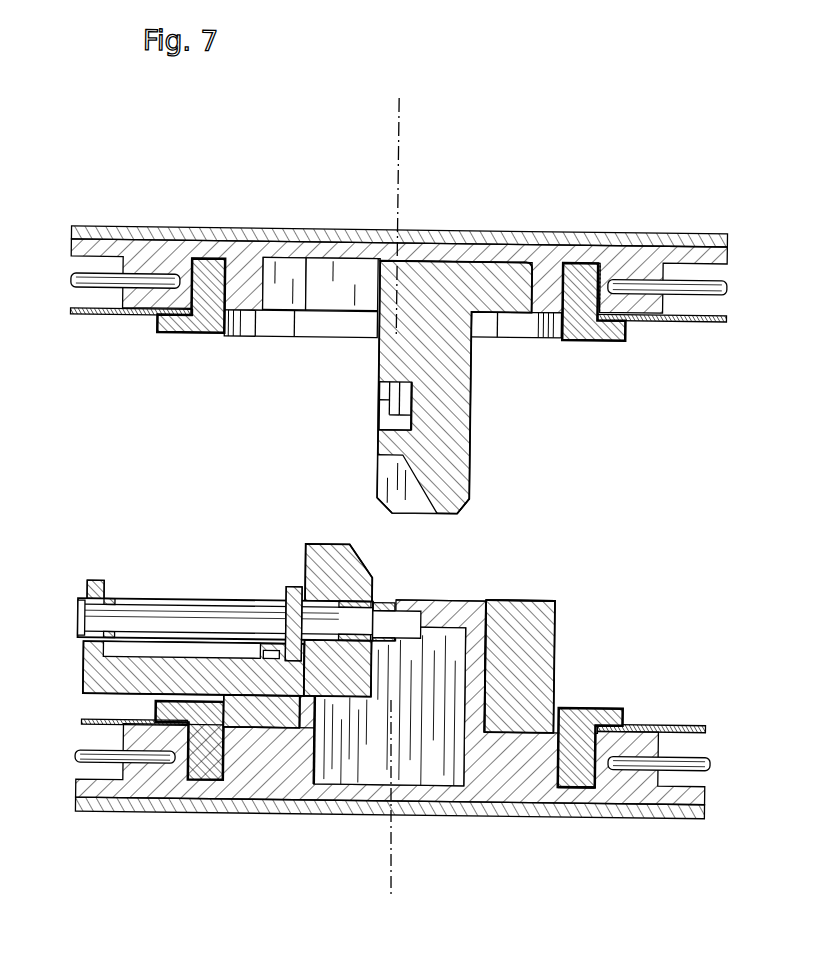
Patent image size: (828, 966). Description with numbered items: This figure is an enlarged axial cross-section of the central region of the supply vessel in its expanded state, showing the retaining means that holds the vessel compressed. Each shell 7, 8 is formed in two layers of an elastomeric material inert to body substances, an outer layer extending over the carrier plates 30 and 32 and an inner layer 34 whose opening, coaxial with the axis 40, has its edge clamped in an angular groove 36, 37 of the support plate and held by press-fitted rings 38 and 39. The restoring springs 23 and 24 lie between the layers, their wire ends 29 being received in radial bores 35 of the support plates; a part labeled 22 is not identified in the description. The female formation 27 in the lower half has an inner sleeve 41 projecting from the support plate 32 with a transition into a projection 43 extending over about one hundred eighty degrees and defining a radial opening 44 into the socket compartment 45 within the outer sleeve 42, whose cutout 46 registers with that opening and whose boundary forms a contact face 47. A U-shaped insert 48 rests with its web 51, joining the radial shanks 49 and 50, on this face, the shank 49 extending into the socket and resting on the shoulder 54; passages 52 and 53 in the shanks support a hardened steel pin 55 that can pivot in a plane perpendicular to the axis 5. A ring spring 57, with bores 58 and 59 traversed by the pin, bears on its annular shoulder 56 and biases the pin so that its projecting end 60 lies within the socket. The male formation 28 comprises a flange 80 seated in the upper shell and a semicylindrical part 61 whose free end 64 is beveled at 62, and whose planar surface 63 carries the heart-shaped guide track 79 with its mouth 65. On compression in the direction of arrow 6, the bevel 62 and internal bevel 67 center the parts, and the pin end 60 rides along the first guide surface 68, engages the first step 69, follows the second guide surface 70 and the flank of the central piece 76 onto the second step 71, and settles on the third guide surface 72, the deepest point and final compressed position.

The axis 5 is at (394, 155).
The arrow 6 is at (417, 103).
The shell 7 is at (621, 217).
The shell 8 is at (685, 698).
The upper mounting plate 22 is at (638, 382).
The restoring spring 23 is at (97, 284).
The restoring spring 24 is at (686, 760).
The female formation 27 is at (541, 583).
The male formation 28 is at (481, 419).
The ends 29 is at (173, 278).
The support plate 30 is at (305, 251).
The support plate 32 is at (518, 769).
The inner layer 34 is at (94, 319).
The radial bores 35 is at (147, 271).
The angular groove 36 is at (570, 261).
The angular groove 37 is at (582, 785).
The press-fitted ring 38 is at (580, 288).
The press-fitted ring 39 is at (595, 711).
The axis 40 is at (179, 298).
The inner sleeve 41 is at (480, 657).
The outer sleeve 42 is at (479, 631).
The projection 43 is at (556, 600).
The radial opening 44 is at (383, 677).
The socket compartment 45 is at (449, 744).
The radial opening 46 is at (208, 599).
The contact face 47 is at (255, 702).
The U-shaped insert 48 is at (172, 683).
The radial shank 49 is at (308, 548).
The radial shank 50 is at (95, 587).
The web 51 is at (148, 780).
The passage 52 is at (354, 698).
The passage 53 is at (75, 600).
The shoulder 54 is at (250, 727).
The pin 55 is at (336, 626).
The annular shoulder 56 is at (287, 661).
The spring 57 is at (225, 593).
The bore 58 is at (272, 697).
The bore 59 is at (111, 602).
The projecting end 60 is at (440, 726).
The semicylindrical part 61 is at (471, 346).
The beveled edge 62 is at (378, 500).
The planar surface 63 is at (376, 345).
The free end 64 is at (425, 515).
The mouth 65 is at (408, 493).
The internal bevel 67 is at (468, 594).
The first guide surface 68 is at (391, 392).
The first step 69 is at (394, 393).
The second guide surface 70 is at (378, 400).
The second step 71 is at (409, 405).
The third guide surface 72 is at (409, 420).
The central piece 76 is at (386, 425).
The guide track 79 is at (377, 412).
The flange 80 is at (472, 277).